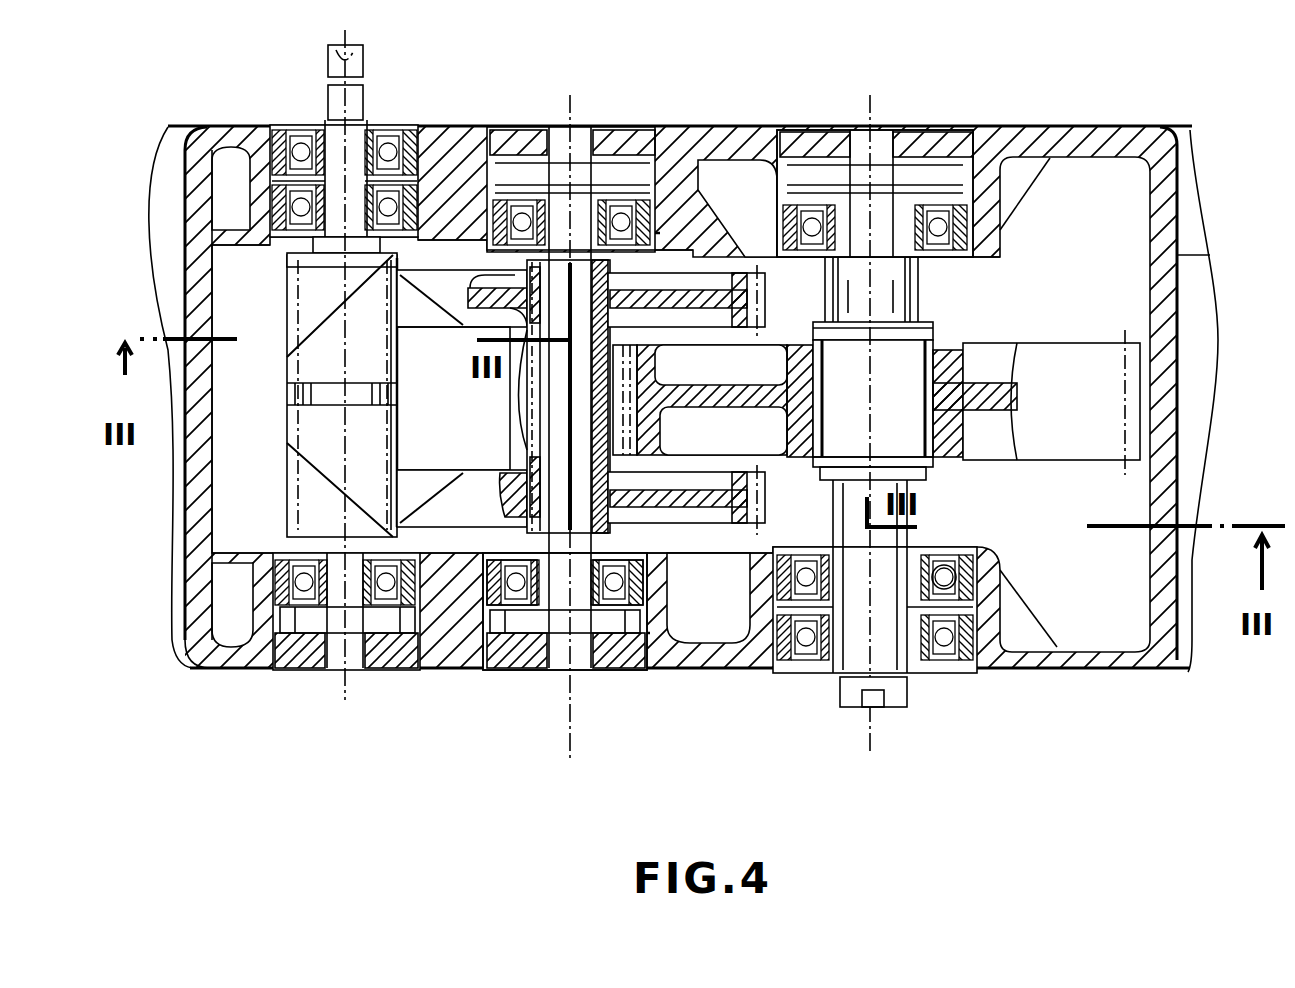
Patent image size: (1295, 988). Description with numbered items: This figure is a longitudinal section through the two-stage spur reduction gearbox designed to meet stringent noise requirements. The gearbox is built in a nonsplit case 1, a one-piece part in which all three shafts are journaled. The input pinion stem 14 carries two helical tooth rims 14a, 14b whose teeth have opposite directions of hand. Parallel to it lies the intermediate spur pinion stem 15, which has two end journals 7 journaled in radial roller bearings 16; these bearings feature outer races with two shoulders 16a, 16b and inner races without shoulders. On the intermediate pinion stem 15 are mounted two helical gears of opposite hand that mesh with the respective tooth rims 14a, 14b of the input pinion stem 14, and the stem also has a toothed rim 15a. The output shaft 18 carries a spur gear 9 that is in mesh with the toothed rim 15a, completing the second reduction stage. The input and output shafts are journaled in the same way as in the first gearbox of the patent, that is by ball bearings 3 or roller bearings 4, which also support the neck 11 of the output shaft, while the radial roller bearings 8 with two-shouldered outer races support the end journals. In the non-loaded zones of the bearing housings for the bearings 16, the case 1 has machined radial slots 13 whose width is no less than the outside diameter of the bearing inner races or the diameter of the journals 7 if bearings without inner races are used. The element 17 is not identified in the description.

The nonsplit case 1 is at (215, 620).
The ball bearings 3 is at (965, 547).
The roller bearings 4 is at (370, 667).
The journals 7 is at (552, 190).
The radial roller bearings 8 is at (960, 130).
The spur gear 9 is at (760, 422).
The neck 11 is at (908, 553).
The radial slots 13 is at (660, 236).
The input pinion stem 14 is at (285, 395).
The helical tooth rim 14a is at (285, 420).
The helical tooth rim 14b is at (285, 365).
The intermediate spur pinion stem 15 is at (555, 500).
The toothed rim 15a is at (512, 420).
The radial roller bearings 16 is at (598, 667).
The shoulder 16a is at (627, 667).
The shoulder 16b is at (537, 667).
The gear web 17 is at (695, 505).
The output shaft 18 is at (830, 672).